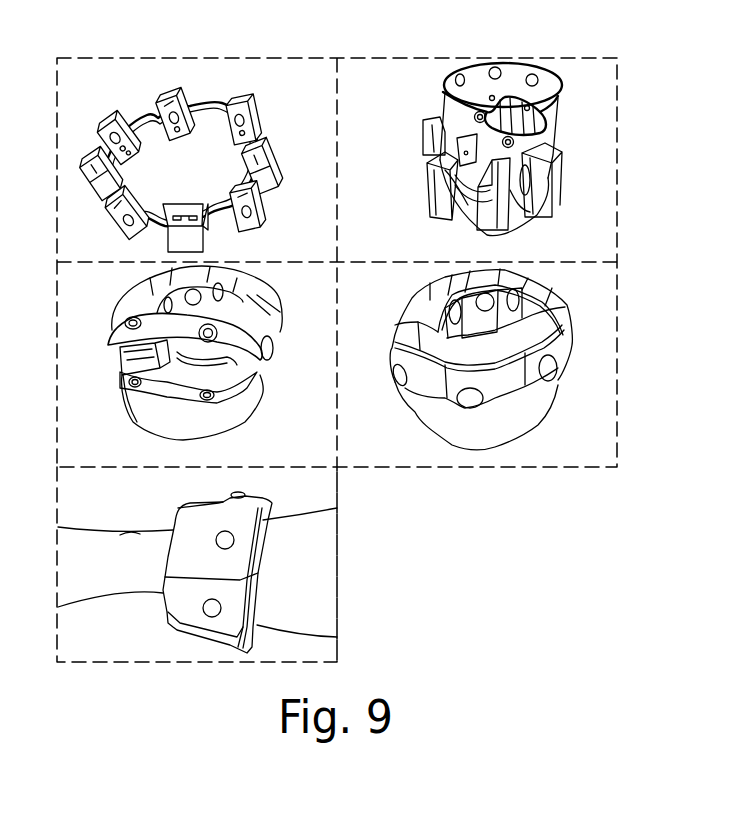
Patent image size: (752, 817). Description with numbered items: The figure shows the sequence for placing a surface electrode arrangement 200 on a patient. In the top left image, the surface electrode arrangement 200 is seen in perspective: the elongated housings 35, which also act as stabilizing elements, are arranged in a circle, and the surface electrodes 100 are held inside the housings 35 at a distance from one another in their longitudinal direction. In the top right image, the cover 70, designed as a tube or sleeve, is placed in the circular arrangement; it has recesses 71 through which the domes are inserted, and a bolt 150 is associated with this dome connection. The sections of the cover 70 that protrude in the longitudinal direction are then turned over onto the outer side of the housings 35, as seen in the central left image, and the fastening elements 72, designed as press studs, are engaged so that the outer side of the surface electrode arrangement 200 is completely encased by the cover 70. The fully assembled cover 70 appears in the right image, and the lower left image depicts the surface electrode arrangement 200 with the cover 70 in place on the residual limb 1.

The residual limb 1 is at (310, 553).
The housing 35 is at (223, 110).
The cover 70 is at (457, 110).
The recess 71 is at (458, 143).
The fastening element 72 is at (112, 310).
The surface electrode 100 is at (165, 110).
The bolt 150 is at (487, 298).
The surface electrode arrangement 200 is at (204, 88).